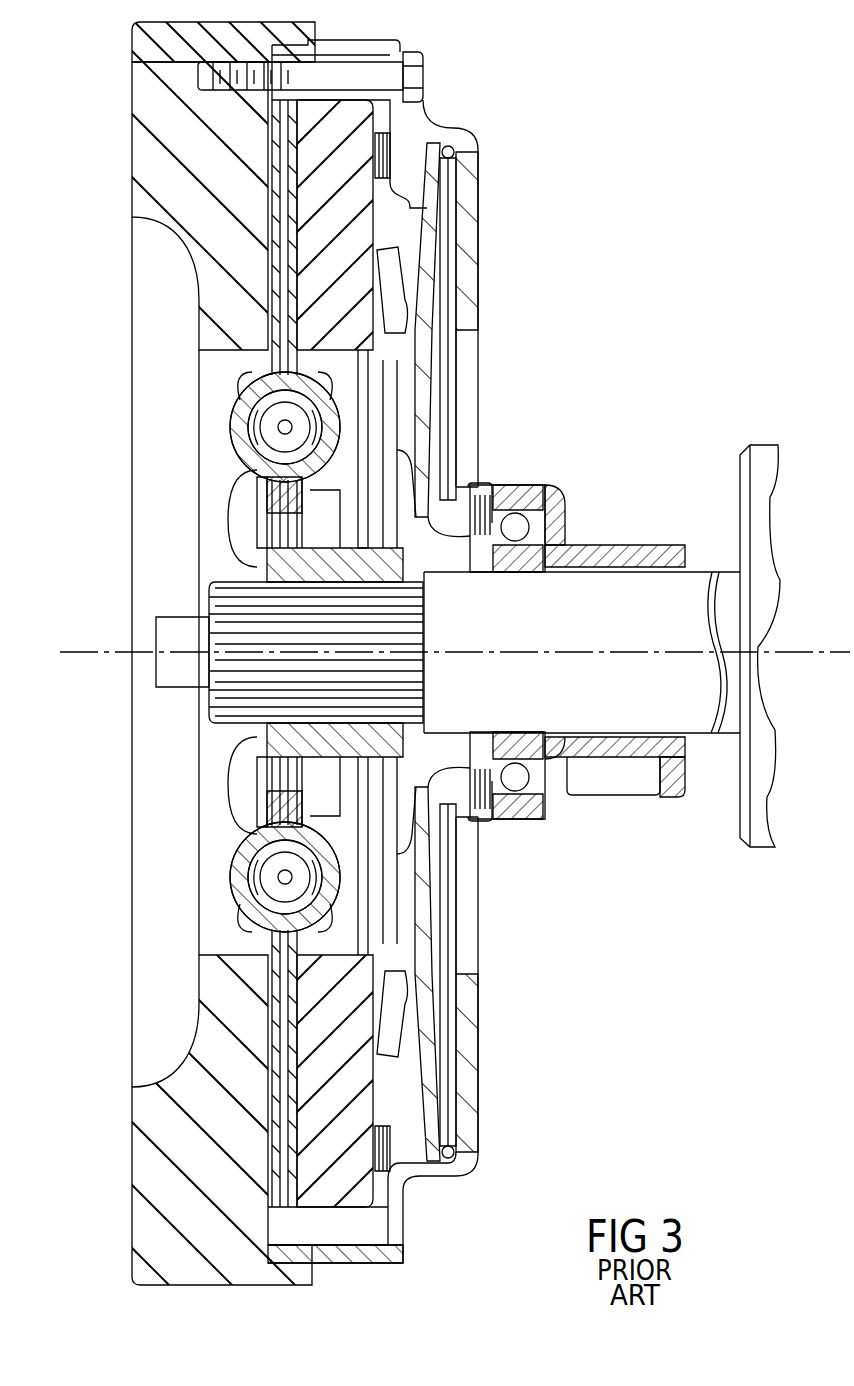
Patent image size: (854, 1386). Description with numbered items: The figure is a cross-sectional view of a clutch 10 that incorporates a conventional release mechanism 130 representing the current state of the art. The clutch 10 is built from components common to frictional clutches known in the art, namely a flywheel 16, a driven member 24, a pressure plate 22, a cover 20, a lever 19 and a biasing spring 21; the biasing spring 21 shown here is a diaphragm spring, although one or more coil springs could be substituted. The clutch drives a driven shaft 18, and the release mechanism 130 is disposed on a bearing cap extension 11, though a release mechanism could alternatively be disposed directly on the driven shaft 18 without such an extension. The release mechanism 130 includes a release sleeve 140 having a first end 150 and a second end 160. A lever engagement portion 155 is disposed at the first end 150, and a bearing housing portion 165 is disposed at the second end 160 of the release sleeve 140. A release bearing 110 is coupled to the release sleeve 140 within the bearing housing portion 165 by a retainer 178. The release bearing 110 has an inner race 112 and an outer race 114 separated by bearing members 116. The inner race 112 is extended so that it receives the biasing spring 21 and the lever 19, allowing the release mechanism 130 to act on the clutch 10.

The clutch 10 is at (526, 74).
The bearing cap extension 11 is at (700, 567).
The flywheel 16 is at (157, 155).
The driven shaft 18 is at (235, 615).
The lever 19 is at (428, 290).
The cover 20 is at (460, 140).
The biasing spring 21 is at (450, 236).
The pressure plate 22 is at (365, 1083).
The driven member 24 is at (287, 160).
The release bearing 110 is at (515, 812).
The inner race 112 is at (535, 767).
The outer race 114 is at (535, 797).
The bearing members 116 is at (520, 778).
The release mechanism 130 is at (596, 648).
The release sleeve 140 is at (666, 521).
The first end 150 is at (695, 843).
The lever engagement portion 155 is at (665, 800).
The second end 160 is at (566, 493).
The bearing housing portion 165 is at (505, 485).
The retainer 178 is at (480, 809).